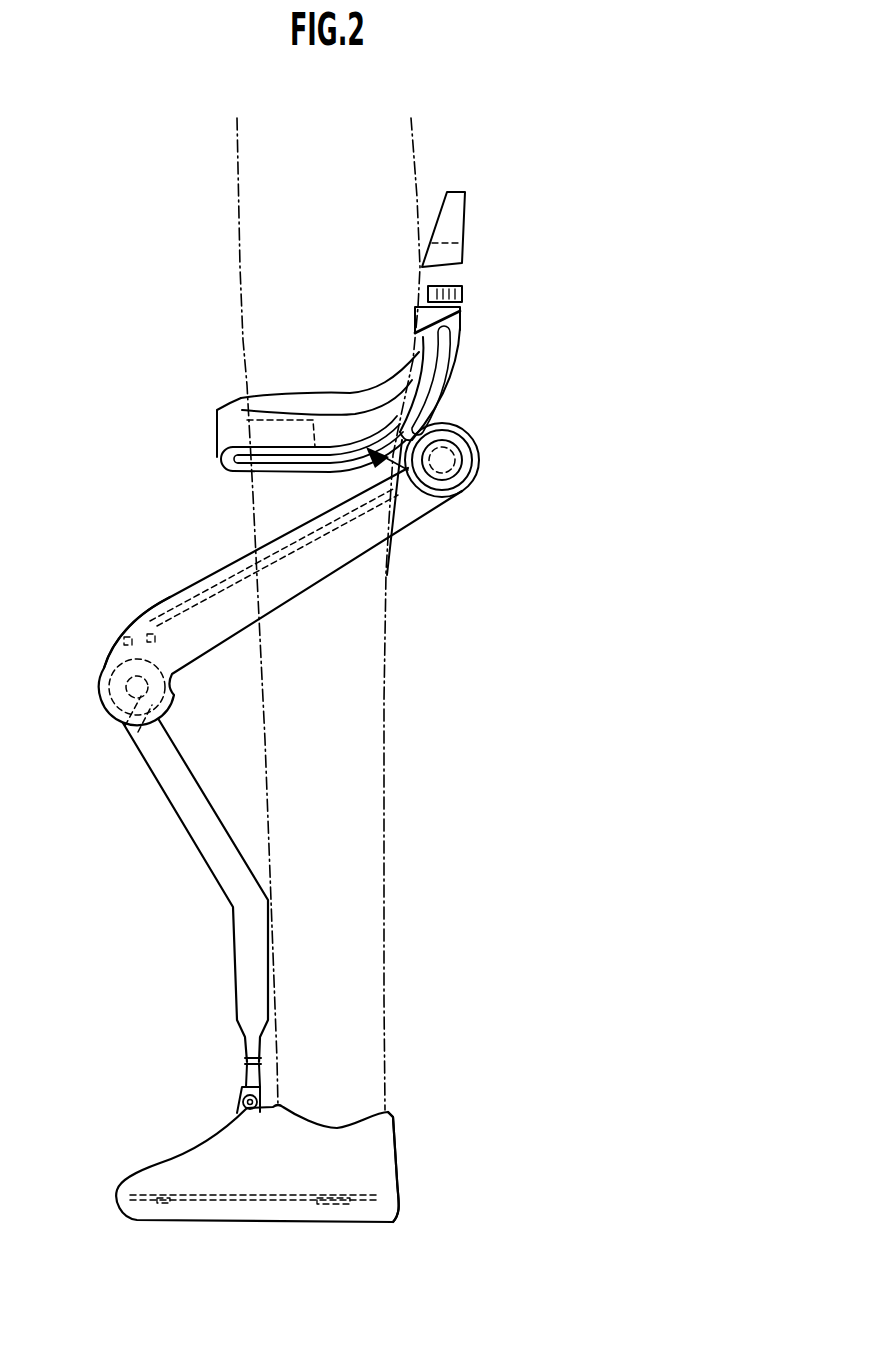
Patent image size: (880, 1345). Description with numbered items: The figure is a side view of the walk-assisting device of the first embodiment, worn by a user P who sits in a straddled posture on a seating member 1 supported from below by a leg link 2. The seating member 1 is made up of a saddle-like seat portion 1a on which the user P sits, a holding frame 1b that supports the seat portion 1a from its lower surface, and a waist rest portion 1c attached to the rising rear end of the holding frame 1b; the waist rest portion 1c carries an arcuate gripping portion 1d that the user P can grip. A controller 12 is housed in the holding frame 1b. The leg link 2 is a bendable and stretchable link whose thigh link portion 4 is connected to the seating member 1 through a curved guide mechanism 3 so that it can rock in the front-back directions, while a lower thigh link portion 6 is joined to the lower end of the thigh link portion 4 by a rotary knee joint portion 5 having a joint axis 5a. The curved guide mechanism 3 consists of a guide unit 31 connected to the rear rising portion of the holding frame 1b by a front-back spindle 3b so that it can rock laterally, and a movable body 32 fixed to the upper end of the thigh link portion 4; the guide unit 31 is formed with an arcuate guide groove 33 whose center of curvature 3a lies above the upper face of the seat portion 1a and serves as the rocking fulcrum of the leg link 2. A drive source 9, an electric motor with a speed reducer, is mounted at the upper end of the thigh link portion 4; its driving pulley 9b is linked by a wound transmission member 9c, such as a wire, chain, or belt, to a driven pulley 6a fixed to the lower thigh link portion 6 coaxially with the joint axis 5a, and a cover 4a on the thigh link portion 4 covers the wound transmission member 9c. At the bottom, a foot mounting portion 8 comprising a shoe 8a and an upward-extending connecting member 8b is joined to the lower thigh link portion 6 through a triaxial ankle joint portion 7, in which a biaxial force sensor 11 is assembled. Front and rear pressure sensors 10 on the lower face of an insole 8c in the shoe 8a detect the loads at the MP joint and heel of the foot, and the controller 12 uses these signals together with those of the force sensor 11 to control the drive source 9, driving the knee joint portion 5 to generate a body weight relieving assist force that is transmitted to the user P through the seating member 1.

The user P is at (236, 187).
The seating member 1 is at (292, 387).
The seat portion 1a is at (375, 387).
The holding frame 1b is at (217, 425).
The waist rest portion 1c is at (415, 314).
The arcuate gripping portion 1d is at (455, 191).
The leg link 2 is at (117, 594).
The curved guide mechanism 3 is at (455, 398).
The rocking fulcrum (center of curvature) 3a is at (295, 316).
The spindle 3b is at (463, 293).
The thigh link portion 4 is at (308, 592).
The cover 4a is at (163, 598).
The knee joint portion 5 is at (90, 703).
The joint axis 5a is at (176, 693).
The lower thigh link portion 6 is at (232, 907).
The driven pulley 6a is at (125, 728).
The ankle joint portion 7 is at (206, 1094).
The foot mounting portion 8 is at (134, 1159).
The shoe 8a is at (398, 1165).
The connecting member 8b is at (235, 1114).
The insole 8c is at (273, 1193).
The drive source 9 is at (477, 452).
The driving pulley 9b is at (480, 469).
The wound transmission member 9c is at (230, 572).
The pressure sensor 10 is at (333, 1210).
The force sensor 11 is at (242, 1085).
The controller 12 is at (263, 420).
The guide unit 31 is at (458, 370).
The movable body 32 is at (400, 522).
The guide groove 33 is at (305, 470).